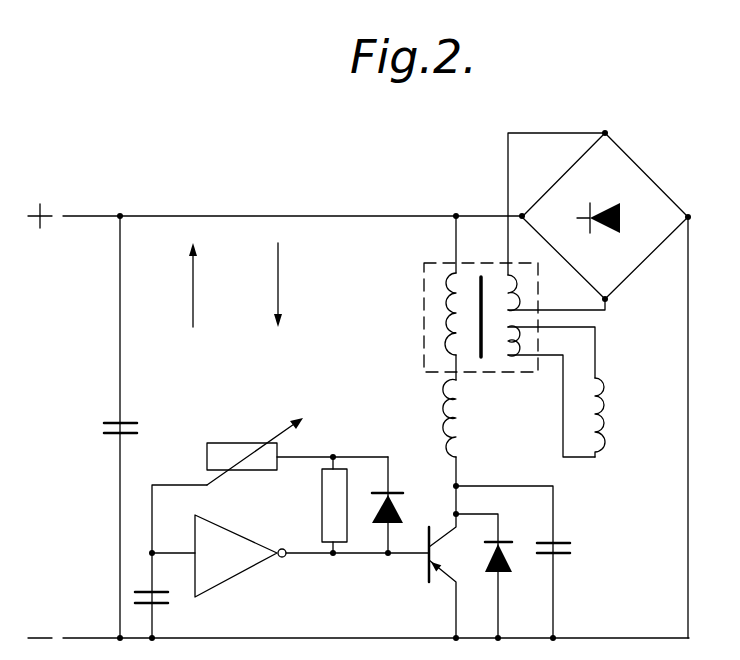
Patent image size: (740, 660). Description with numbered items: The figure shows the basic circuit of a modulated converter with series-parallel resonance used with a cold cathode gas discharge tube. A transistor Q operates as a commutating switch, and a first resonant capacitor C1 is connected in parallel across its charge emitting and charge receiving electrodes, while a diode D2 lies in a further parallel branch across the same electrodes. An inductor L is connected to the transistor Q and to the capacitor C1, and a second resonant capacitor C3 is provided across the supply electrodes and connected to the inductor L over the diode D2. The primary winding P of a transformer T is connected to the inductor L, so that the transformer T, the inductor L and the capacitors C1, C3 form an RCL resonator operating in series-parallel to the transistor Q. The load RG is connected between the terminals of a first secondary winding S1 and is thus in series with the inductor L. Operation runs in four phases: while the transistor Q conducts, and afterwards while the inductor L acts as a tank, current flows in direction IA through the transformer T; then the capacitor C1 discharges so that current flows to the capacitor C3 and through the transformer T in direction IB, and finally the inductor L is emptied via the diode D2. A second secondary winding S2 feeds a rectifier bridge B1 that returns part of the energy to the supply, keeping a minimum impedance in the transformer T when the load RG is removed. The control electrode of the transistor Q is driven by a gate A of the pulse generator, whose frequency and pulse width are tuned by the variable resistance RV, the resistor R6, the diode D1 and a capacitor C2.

The current direction IA is at (206, 285).
The current direction IB is at (291, 285).
The second resonant capacitor C3 is at (101, 435).
The transformer T is at (424, 311).
The primary winding P is at (443, 298).
The first secondary winding S1 is at (523, 343).
The second secondary winding S2 is at (512, 294).
The bridge rectifier B1 is at (605, 216).
The load RG is at (616, 417).
The inductor L is at (442, 447).
The transistor Q is at (373, 576).
The diode D2 is at (493, 576).
The first resonant capacitor C1 is at (524, 562).
The amplifier A is at (219, 552).
The capacitor C2 is at (163, 595).
The variable resistance RV is at (270, 484).
The resistor R6 is at (316, 505).
The diode D1 is at (398, 505).